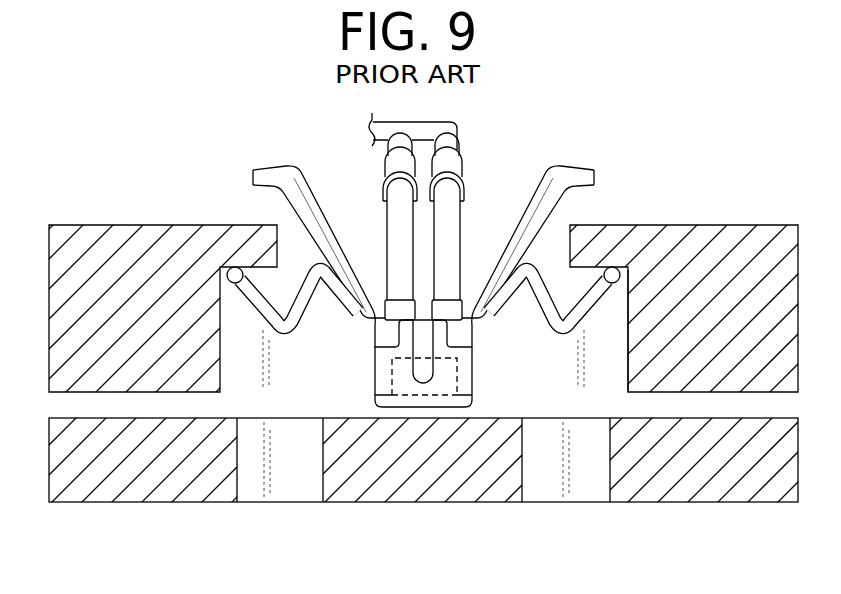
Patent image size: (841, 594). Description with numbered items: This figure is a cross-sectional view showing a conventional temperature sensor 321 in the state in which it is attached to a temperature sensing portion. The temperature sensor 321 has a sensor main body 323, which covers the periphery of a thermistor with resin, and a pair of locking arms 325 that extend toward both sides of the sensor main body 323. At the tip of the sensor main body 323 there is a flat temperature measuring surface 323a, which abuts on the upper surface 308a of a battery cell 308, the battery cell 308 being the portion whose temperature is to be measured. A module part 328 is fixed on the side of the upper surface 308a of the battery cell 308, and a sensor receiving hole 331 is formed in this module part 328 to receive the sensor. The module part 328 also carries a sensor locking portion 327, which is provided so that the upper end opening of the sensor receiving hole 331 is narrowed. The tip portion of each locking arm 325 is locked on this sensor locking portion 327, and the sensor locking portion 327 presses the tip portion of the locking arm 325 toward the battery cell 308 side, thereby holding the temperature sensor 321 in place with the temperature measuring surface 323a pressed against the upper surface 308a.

The battery cell 308 is at (473, 487).
The upper surface 308a is at (498, 418).
The temperature sensor 321 is at (372, 377).
The sensor main body 323 is at (470, 362).
The temperature measuring surface 323a is at (418, 412).
The locking arm 325 is at (312, 298).
The sensor locking portion 327 is at (272, 227).
The module part 328 is at (752, 222).
The sensor receiving hole 331 is at (627, 353).